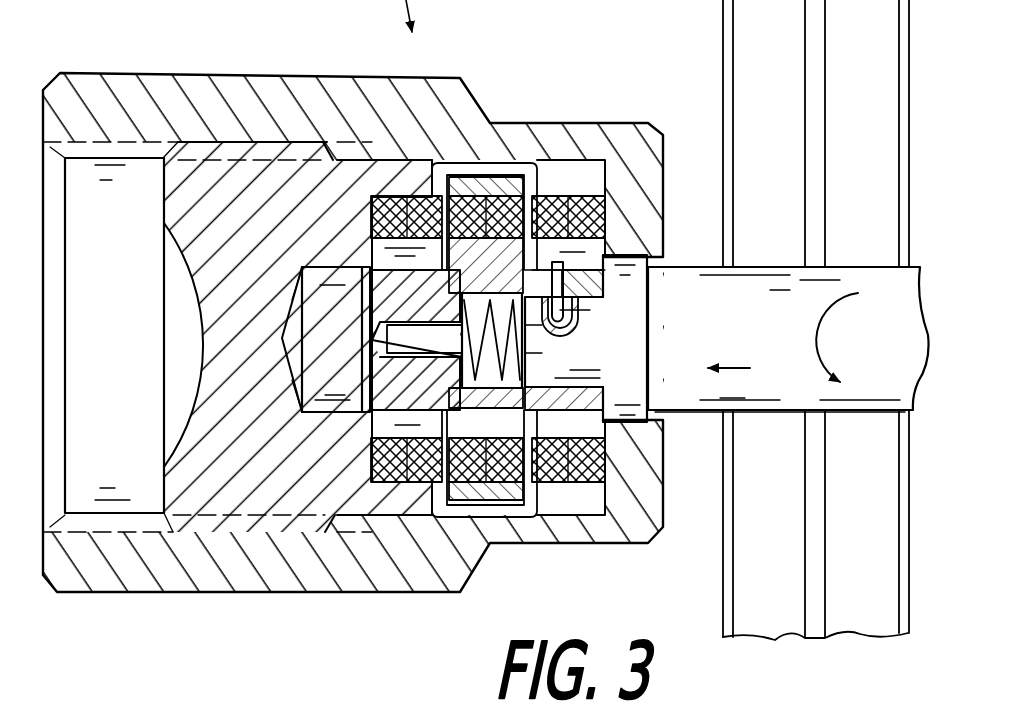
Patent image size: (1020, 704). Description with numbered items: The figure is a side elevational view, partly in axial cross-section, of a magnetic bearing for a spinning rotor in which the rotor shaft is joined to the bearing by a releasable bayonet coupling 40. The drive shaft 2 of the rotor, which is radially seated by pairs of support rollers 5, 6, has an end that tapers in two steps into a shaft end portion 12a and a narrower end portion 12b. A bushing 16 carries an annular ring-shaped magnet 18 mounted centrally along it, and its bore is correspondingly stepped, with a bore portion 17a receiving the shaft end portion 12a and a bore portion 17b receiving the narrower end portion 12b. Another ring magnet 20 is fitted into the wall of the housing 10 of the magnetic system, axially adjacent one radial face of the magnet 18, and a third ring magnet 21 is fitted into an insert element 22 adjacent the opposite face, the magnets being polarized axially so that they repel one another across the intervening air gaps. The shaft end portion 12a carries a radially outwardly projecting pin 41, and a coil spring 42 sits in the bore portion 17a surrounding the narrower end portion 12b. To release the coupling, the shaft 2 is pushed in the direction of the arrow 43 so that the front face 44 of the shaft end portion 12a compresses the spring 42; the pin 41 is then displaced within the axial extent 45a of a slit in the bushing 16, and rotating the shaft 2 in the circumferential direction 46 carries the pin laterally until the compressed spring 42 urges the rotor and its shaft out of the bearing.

The housing 10 is at (455, 88).
The insert element 22 is at (243, 493).
The third ring magnet 21 is at (392, 478).
The coil spring 42 is at (472, 445).
The ring magnet 20 is at (575, 463).
The annular ring-shaped magnet 18 is at (503, 500).
The narrower end portion of the shaft 12b is at (397, 332).
The bore portion 17b is at (385, 352).
The bushing 16 is at (382, 378).
The shaft end portion 12a is at (630, 310).
The pin 41 is at (605, 240).
The front face 44 is at (527, 342).
The axial extent of the slit 45a is at (557, 262).
The bore portion 17a is at (600, 387).
The bayonet coupling 40 is at (668, 314).
The drive shaft 2 is at (693, 393).
The arrow 43 is at (736, 365).
The circumferential direction 46 is at (830, 340).
The support roller 5 is at (782, 623).
The support roller 6 is at (904, 316).